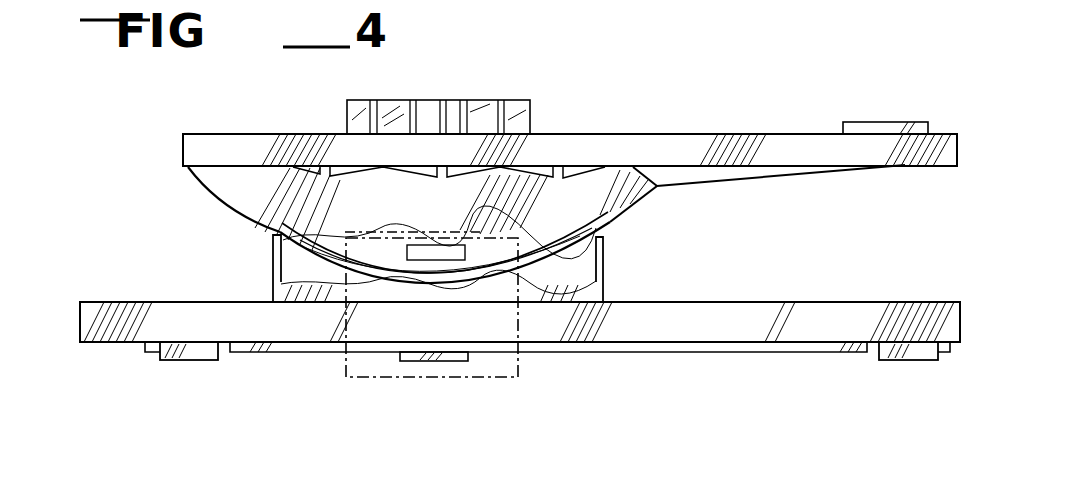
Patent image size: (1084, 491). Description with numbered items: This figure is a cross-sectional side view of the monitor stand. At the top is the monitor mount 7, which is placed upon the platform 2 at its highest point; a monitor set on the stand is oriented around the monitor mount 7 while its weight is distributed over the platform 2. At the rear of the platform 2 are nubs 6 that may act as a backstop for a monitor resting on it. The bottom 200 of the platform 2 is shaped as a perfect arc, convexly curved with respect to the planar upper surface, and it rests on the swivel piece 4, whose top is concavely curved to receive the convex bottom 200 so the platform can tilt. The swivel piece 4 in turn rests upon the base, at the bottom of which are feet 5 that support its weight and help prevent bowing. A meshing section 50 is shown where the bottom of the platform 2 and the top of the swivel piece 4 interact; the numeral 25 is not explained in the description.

The platform 2 is at (630, 150).
The swivel piece 4 is at (272, 292).
The feet 5 is at (210, 356).
The nubs 6 is at (865, 128).
The monitor mount 7 is at (431, 115).
The sensor element 25 is at (582, 270).
The meshing section 50 is at (412, 384).
The bottom of platform 200 is at (612, 222).